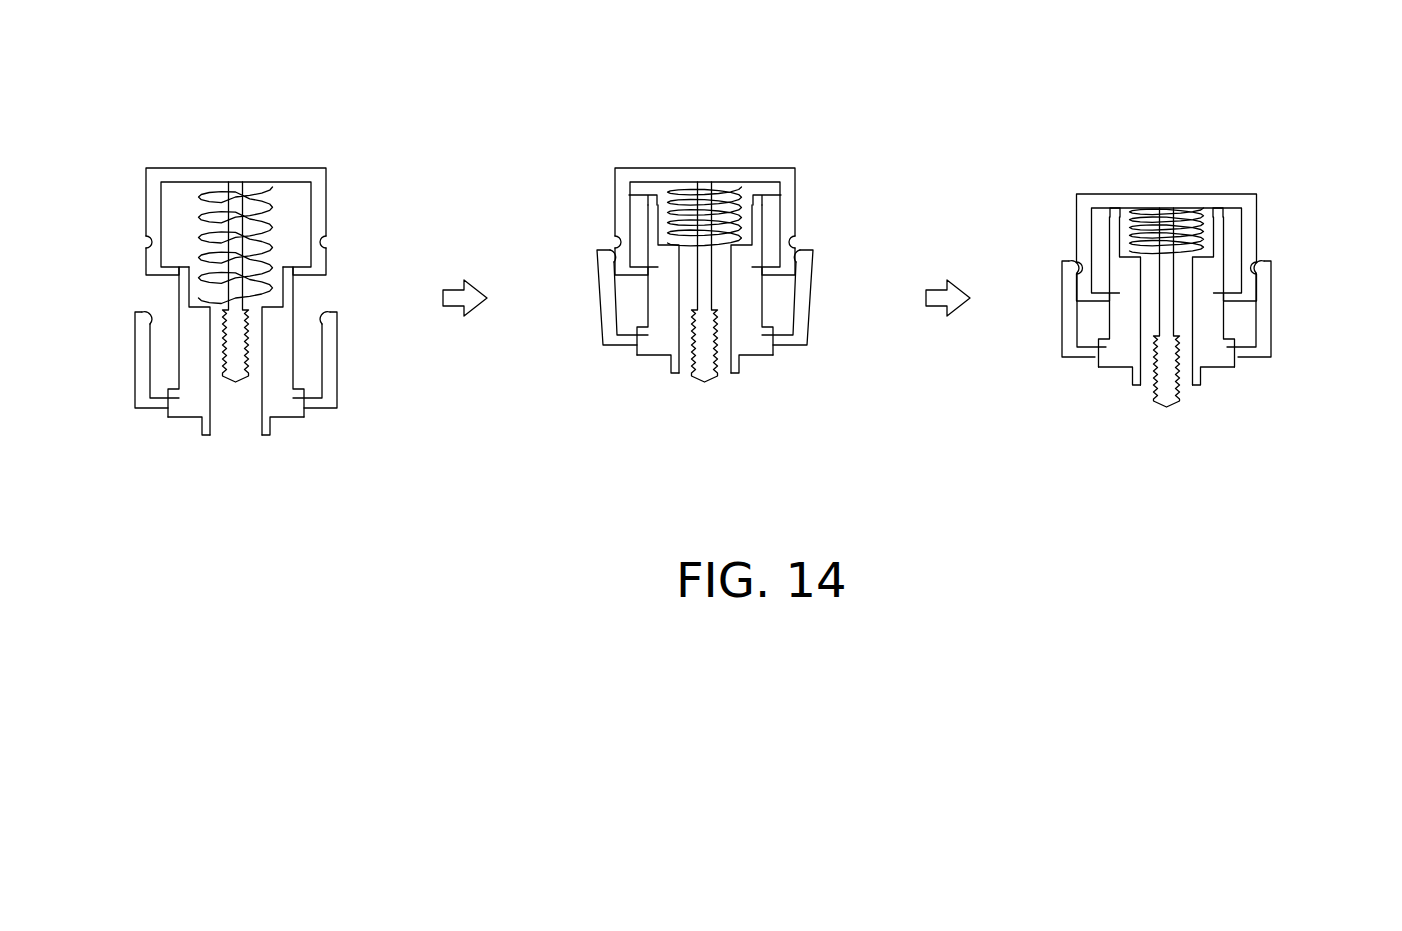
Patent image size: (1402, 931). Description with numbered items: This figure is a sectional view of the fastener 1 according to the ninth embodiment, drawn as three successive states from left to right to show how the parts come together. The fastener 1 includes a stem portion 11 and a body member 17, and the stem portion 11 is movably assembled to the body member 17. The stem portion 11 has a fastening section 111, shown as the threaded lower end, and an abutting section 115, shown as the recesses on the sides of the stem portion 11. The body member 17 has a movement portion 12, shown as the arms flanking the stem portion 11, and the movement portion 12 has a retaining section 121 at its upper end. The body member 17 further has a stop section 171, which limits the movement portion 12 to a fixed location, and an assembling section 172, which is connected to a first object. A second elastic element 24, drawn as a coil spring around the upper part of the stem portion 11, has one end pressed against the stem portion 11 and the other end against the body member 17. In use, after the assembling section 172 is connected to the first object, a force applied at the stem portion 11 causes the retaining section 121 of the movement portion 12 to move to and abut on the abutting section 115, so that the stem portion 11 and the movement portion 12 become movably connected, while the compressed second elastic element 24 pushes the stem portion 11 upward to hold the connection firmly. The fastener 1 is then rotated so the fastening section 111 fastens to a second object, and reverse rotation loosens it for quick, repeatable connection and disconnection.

The fastener 1 is at (143, 157).
The stem portion 11 is at (292, 168).
The fastening section 111 is at (240, 380).
The abutting section 115 is at (328, 243).
The movement portion 12 is at (342, 370).
The retaining section 121 is at (324, 317).
The body member 17 is at (178, 305).
The stop section 171 is at (300, 413).
The assembling section 172 is at (200, 420).
The second elastic element 24 is at (200, 220).